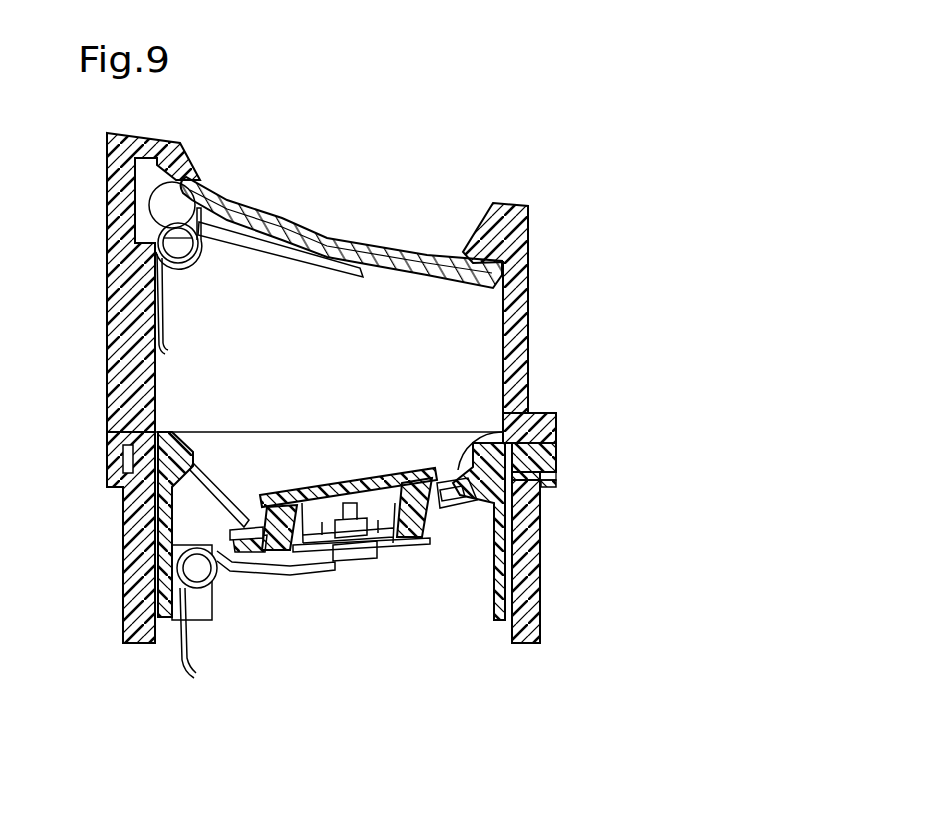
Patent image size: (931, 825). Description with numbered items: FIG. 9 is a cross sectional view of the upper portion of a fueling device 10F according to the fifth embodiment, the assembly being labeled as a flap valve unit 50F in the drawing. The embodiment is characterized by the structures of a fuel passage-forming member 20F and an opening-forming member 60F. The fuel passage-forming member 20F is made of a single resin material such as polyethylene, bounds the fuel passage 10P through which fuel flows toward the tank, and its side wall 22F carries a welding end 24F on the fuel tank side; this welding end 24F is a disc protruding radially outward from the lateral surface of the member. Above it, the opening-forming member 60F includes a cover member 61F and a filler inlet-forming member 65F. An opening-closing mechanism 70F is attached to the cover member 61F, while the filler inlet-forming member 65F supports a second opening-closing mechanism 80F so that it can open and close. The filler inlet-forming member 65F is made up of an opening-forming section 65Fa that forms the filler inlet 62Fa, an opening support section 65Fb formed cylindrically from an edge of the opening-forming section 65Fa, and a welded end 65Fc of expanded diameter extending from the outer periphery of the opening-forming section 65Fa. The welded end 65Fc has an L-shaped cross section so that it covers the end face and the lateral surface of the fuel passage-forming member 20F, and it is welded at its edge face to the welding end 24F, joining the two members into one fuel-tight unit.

The receptacle connector unit 50F is at (453, 285).
The fueling device 10F is at (453, 285).
The opening-forming member 60F is at (453, 314).
The cover member 61F is at (528, 350).
The filler inlet-forming member 65F is at (621, 444).
The opening-forming section 65Fa is at (557, 411).
The opening support section 65Fb is at (557, 481).
The welded end 65Fc is at (557, 448).
The filler inlet 62Fa is at (445, 468).
The opening-closing mechanism 70F is at (267, 303).
The opening-closing mechanism 80F is at (267, 597).
The fuel passage 10P is at (333, 495).
The fuel passage-forming member 20F is at (419, 537).
The side wall 22F is at (541, 596).
The welding end 24F is at (547, 488).